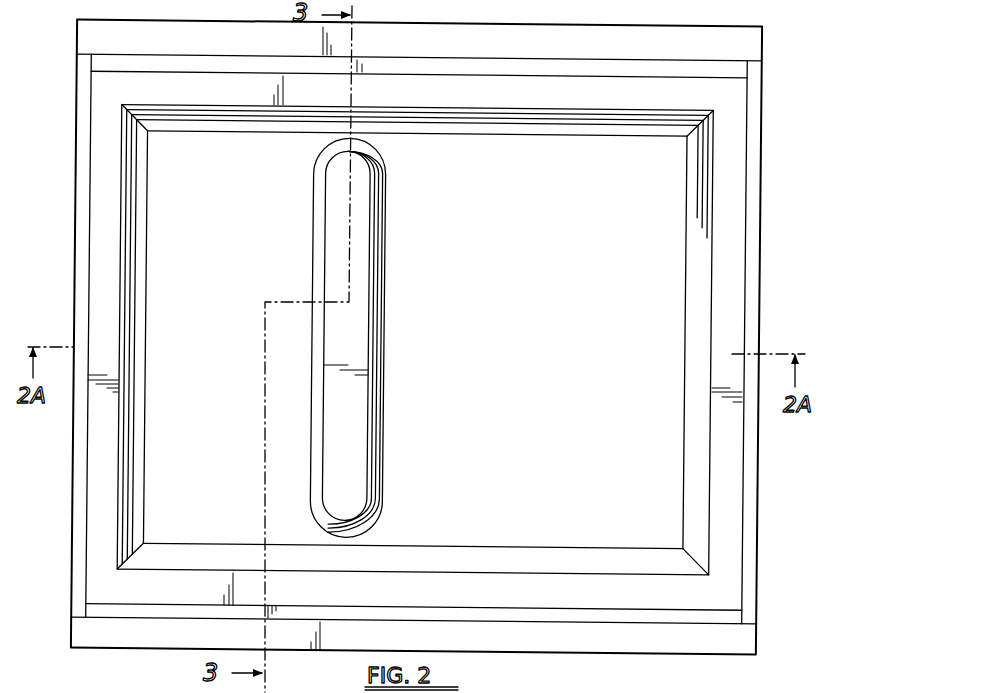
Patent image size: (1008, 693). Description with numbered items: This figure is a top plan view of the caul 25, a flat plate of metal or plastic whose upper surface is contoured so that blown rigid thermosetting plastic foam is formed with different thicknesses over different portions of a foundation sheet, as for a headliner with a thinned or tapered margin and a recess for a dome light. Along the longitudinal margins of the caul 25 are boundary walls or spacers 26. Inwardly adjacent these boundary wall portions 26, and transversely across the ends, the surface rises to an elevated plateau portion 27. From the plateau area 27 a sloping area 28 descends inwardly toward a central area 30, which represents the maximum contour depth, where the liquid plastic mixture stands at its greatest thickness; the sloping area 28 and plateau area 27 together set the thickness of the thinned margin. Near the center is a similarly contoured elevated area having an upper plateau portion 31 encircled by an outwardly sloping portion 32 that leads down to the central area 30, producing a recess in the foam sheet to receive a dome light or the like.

The caul 25 is at (72, 467).
The boundary walls 26 is at (732, 68).
The elevated plateau portion 27 is at (638, 93).
The sloping area 28 is at (138, 310).
The central area 30 is at (632, 482).
The upper plateau portion 31 is at (353, 493).
The outwardly sloping portion 32 is at (375, 400).